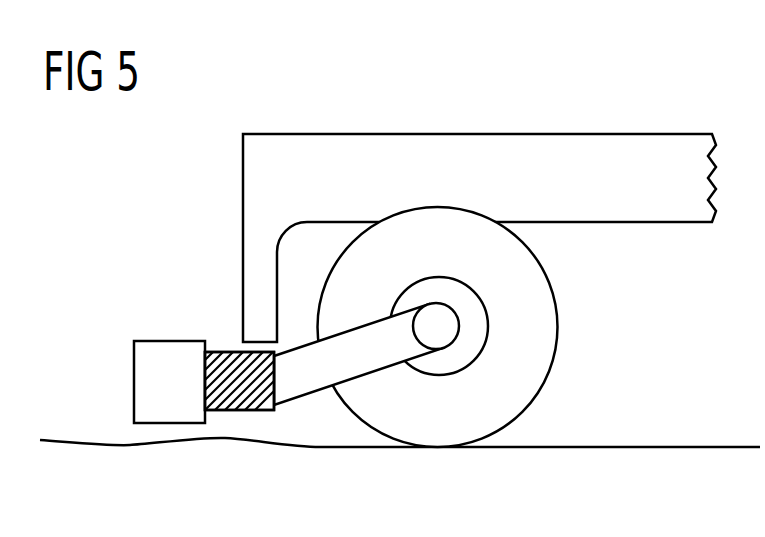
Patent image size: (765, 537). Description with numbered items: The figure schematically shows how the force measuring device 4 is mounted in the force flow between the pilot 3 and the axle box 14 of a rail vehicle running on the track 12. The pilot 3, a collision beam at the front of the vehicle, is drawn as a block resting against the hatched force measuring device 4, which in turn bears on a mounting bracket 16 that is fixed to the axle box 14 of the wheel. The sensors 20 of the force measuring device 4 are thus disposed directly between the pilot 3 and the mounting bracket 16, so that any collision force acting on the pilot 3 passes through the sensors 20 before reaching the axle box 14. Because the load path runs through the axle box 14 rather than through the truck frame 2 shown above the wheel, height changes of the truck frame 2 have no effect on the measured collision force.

The truck frame 2 is at (614, 150).
The pilot 3 is at (168, 350).
The force measuring device 4 is at (229, 360).
The track 12 is at (83, 445).
The axle box 14 is at (441, 350).
The mounting bracket 16 is at (300, 395).
The sensors 20 is at (257, 407).